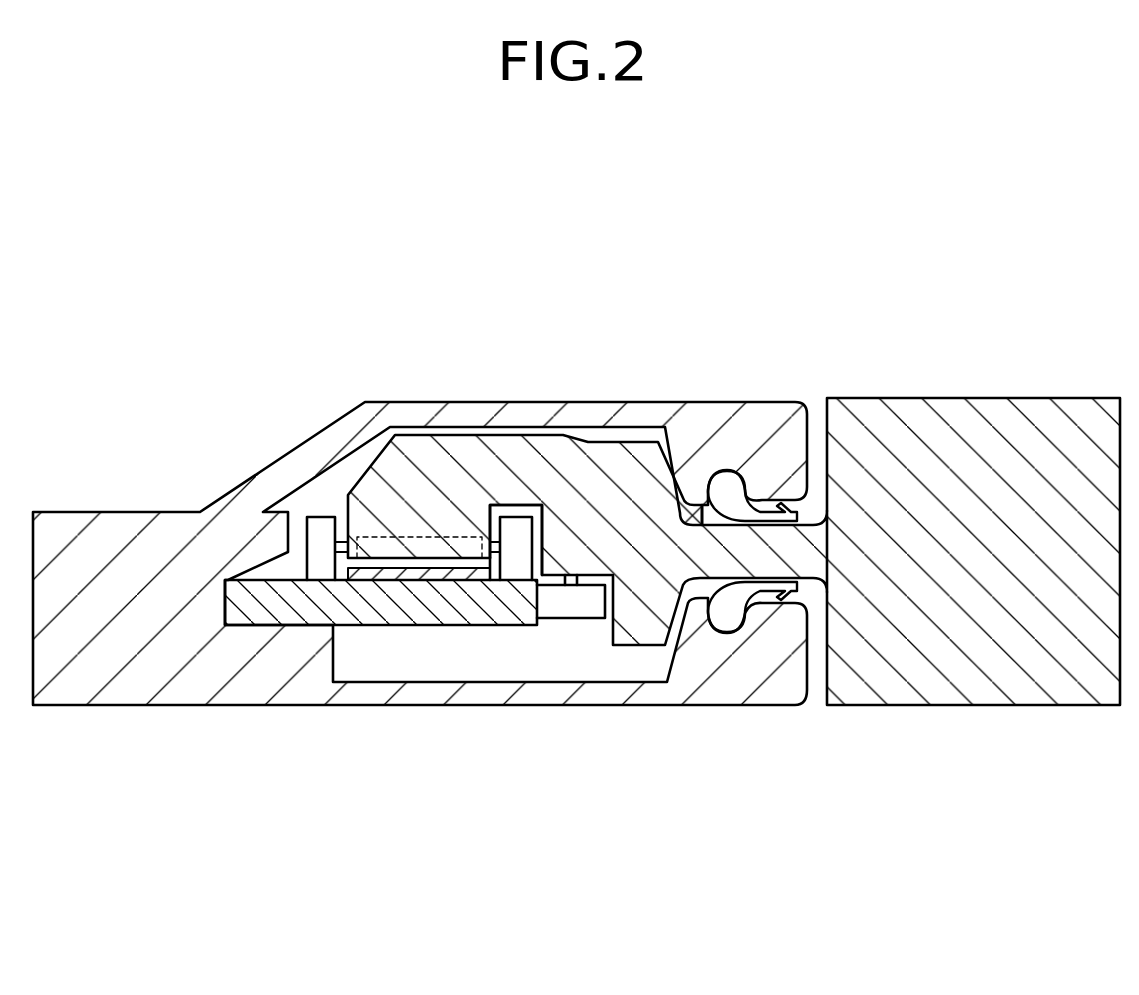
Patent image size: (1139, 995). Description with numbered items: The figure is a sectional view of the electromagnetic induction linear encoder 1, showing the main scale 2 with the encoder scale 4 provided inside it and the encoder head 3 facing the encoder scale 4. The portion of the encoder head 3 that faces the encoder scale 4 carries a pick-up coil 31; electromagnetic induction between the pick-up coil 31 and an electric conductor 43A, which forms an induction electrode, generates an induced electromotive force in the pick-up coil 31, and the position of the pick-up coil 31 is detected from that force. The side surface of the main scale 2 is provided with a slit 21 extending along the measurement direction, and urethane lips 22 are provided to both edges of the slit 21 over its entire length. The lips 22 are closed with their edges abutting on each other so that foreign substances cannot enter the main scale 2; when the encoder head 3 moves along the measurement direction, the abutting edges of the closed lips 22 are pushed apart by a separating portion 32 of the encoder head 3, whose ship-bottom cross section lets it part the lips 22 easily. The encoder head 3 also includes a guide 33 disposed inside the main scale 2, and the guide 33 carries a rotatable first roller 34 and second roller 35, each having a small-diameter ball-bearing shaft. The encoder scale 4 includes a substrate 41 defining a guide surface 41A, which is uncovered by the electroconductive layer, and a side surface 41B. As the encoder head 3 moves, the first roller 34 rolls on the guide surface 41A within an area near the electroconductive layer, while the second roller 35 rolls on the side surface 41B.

The electromagnetic induction linear encoder 1 is at (590, 259).
The main scale 2 is at (425, 391).
The encoder head 3 is at (1005, 372).
The encoder scale 4 is at (385, 652).
The slit 21 is at (801, 602).
The lips 22 is at (729, 477).
The pick-up coil 31 is at (375, 537).
The separating portion 32 is at (752, 548).
The guide 33 is at (463, 442).
The first roller 34 is at (318, 530).
The second roller 35 is at (585, 610).
The substrate 41 is at (470, 606).
The guide surface 41A is at (273, 578).
The side surface 41B is at (548, 598).
The electric conductor 43A is at (410, 566).